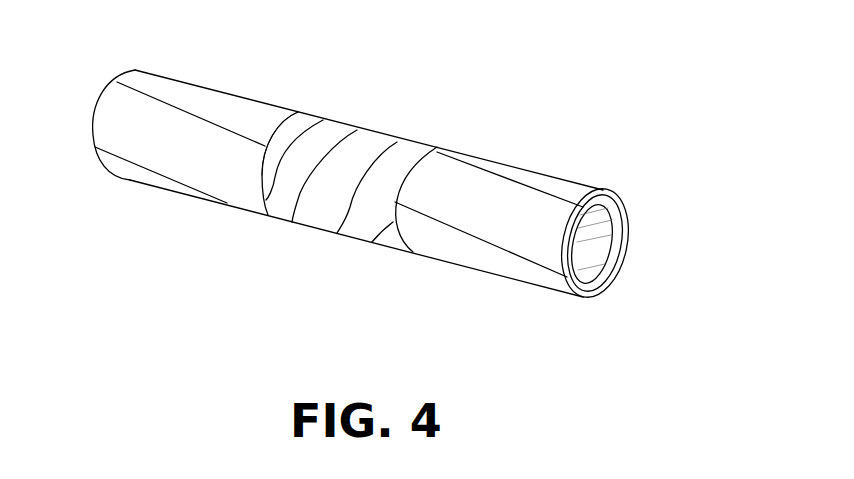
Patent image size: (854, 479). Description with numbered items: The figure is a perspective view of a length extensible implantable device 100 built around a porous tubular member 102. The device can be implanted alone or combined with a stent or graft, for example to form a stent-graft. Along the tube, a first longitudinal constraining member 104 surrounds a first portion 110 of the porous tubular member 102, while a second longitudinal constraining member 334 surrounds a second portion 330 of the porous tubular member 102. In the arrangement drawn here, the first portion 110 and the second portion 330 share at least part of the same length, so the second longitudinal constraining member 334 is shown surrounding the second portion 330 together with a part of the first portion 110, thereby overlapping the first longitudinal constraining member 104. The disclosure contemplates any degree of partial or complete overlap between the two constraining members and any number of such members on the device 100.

The length extensible implantable device 100 is at (544, 92).
The first portion 110 is at (613, 170).
The porous tubular member 102 is at (620, 240).
The first longitudinal constraining member 104 is at (445, 243).
The second portion 330 is at (272, 232).
The second longitudinal constraining member 334 is at (280, 173).